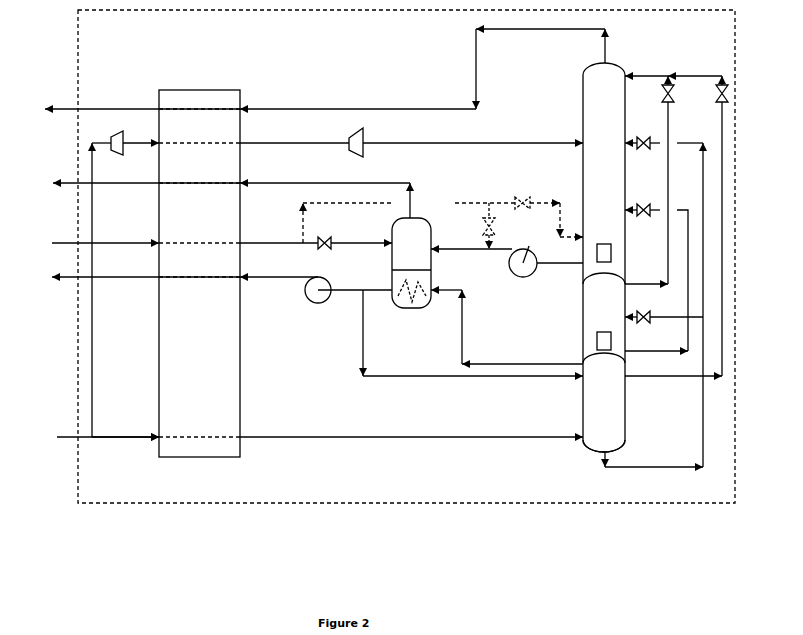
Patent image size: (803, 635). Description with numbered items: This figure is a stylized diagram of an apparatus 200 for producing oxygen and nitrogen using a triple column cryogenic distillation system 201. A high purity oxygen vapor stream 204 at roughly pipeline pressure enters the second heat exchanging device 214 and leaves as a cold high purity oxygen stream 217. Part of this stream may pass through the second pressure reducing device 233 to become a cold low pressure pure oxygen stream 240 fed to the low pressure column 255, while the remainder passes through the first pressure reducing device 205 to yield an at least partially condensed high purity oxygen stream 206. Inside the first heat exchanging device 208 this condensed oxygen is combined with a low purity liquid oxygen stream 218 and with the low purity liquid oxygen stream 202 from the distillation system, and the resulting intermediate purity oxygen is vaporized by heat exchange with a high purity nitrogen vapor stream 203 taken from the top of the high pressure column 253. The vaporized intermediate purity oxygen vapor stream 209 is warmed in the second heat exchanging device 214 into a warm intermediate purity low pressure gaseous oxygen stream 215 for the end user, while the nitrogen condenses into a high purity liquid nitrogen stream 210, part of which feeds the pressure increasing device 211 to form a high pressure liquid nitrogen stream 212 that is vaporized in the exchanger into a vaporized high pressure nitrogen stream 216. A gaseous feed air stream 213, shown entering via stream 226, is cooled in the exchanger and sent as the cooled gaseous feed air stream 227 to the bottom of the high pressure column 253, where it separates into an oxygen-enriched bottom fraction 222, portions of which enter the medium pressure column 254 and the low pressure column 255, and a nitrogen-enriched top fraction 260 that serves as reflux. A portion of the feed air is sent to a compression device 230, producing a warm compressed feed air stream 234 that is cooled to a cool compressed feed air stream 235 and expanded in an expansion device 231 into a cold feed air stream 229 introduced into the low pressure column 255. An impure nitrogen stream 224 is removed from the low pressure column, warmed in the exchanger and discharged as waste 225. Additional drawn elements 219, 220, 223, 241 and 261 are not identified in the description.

The apparatus 200 is at (77, 77).
The cryogenic distillation system 201 is at (614, 257).
The low purity liquid oxygen stream 202 is at (560, 256).
The high purity nitrogen vapor stream 203 is at (506, 327).
The high purity oxygen vapor stream 204 is at (92, 243).
The first pressure reducing device 205 is at (323, 236).
The at least partially condensed high purity oxygen stream 206 is at (361, 235).
The first heat exchanging device 208 is at (427, 214).
The intermediate purity oxygen vapor stream 209 is at (325, 192).
The high purity liquid nitrogen stream 210 is at (390, 282).
The pressure increasing device 211 is at (317, 299).
The high pressure liquid nitrogen stream 212 is at (279, 269).
The gaseous feed air stream 213 is at (95, 437).
The second heat exchanging device 214 is at (199, 284).
The warm intermediate purity low pressure gaseous oxygen stream 215 is at (133, 183).
The vaporized high pressure nitrogen stream 216 is at (132, 277).
The cold high purity oxygen stream 217 is at (316, 223).
The low purity liquid oxygen stream 218 is at (471, 238).
The line to column 219 is at (473, 342).
The flow controller 220 is at (528, 252).
The oxygen-enriched bottom fraction 222 is at (654, 302).
The line 223 is at (676, 226).
The impure nitrogen stream 224 is at (422, 69).
The waste 225 is at (130, 109).
The stream 226 is at (125, 429).
The gaseous feed air stream 227 is at (411, 429).
The cold feed air stream 229 is at (473, 134).
The compression device 230 is at (112, 138).
The expansion device 231 is at (357, 141).
The second pressure reducing device 233 is at (494, 197).
The warm compressed feed air stream 234 is at (125, 282).
The cool compressed feed air stream 235 is at (294, 134).
The cold low pressure pure oxygen stream 240 is at (556, 210).
The control valve 241 is at (497, 226).
The high pressure column 253 is at (633, 399).
The medium pressure column 254 is at (604, 331).
The low pressure column 255 is at (604, 221).
The nitrogen-enriched top fraction 260 is at (673, 380).
The line 261 is at (646, 293).